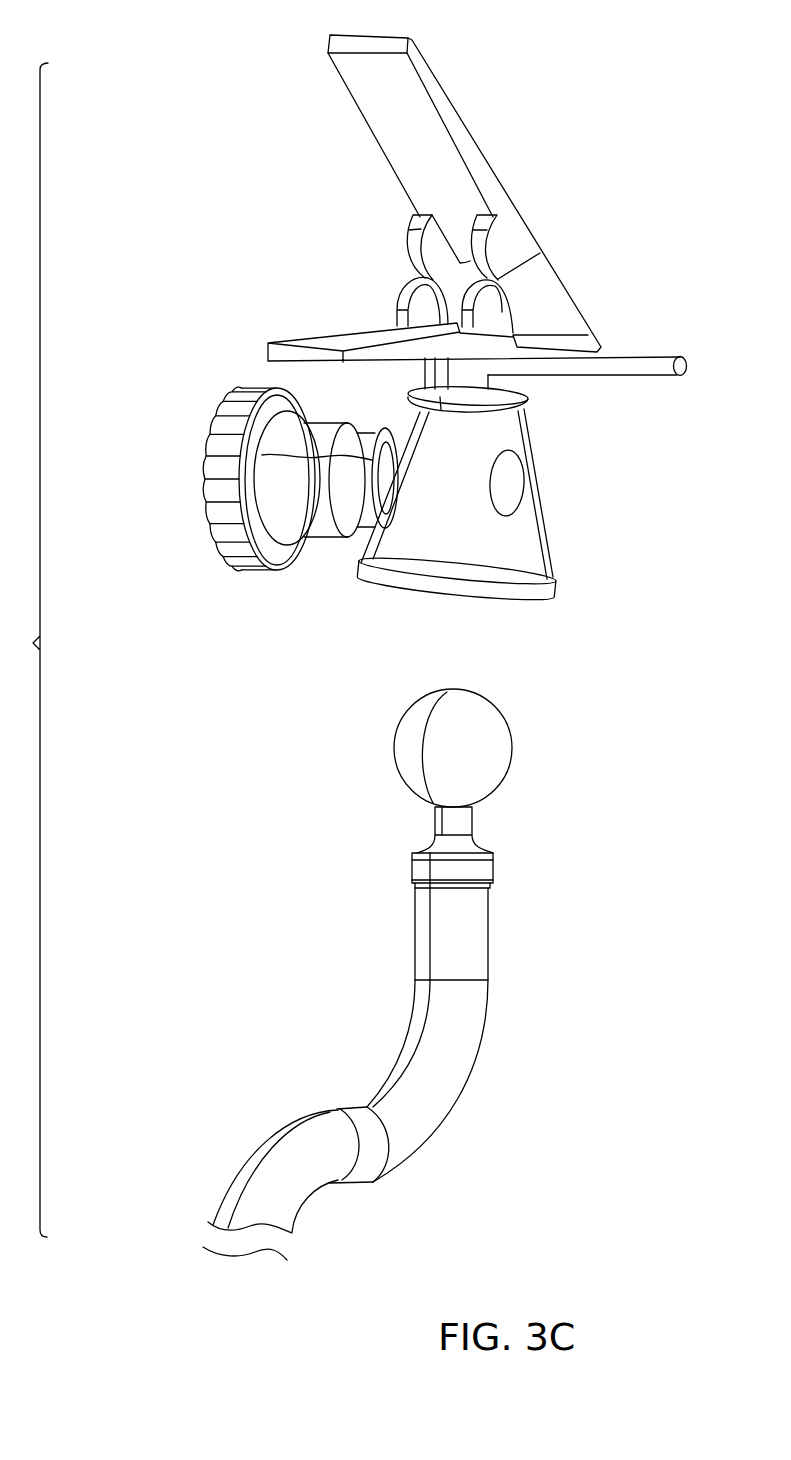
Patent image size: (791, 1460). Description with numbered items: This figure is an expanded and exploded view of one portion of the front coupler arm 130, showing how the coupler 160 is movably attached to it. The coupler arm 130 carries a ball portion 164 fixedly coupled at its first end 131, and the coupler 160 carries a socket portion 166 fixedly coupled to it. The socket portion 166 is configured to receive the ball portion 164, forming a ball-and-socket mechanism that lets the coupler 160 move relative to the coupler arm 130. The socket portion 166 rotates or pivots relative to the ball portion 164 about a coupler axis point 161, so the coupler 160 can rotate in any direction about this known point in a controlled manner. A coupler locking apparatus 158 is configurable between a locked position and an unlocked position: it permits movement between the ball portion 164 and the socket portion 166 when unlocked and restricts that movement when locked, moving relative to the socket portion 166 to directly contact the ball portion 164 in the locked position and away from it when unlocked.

The front coupler arm 130 is at (447, 1133).
The first end 131 is at (480, 892).
The coupler locking apparatus 158 is at (214, 438).
The coupler 160 is at (507, 192).
The coupler axis point 161 is at (455, 745).
The ball portion 164 is at (510, 720).
The socket portion 166 is at (549, 549).